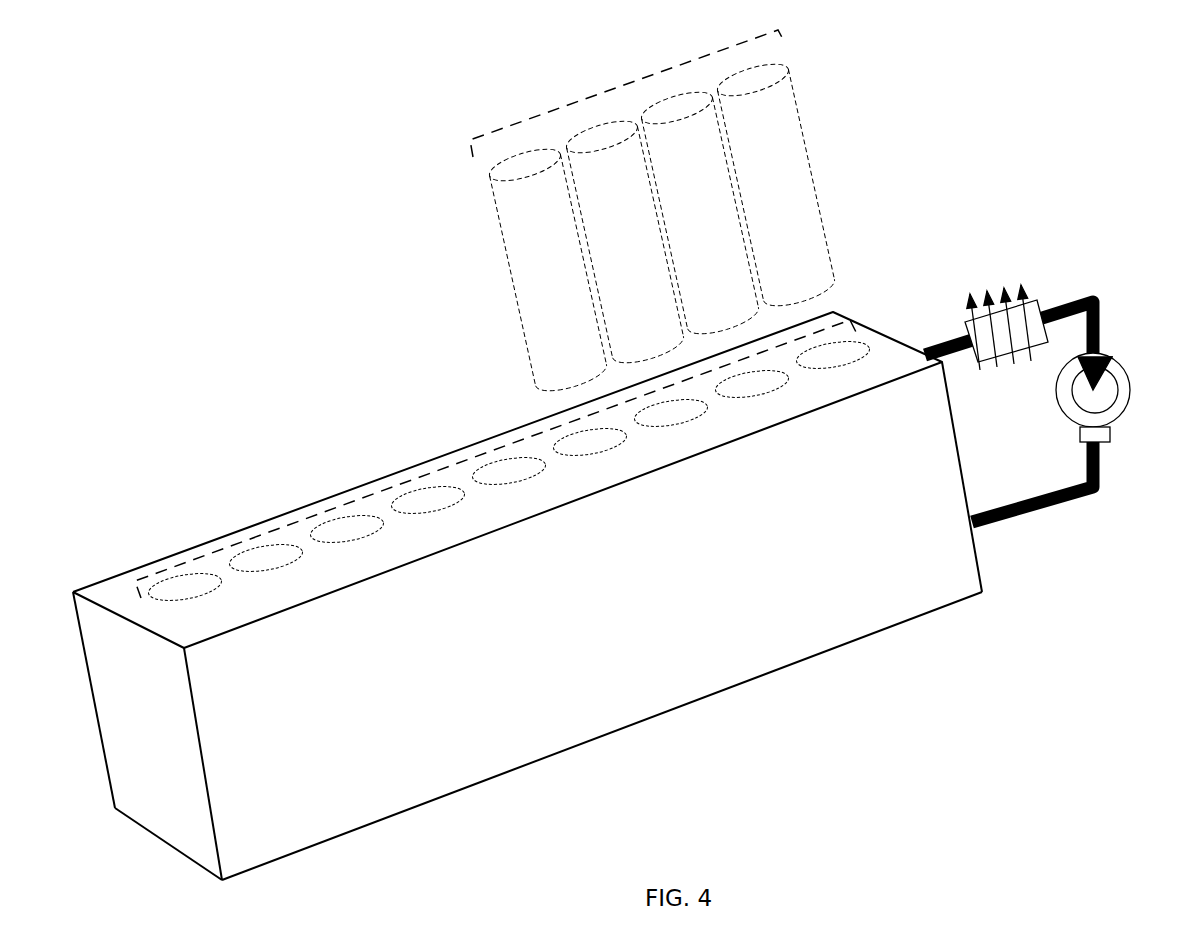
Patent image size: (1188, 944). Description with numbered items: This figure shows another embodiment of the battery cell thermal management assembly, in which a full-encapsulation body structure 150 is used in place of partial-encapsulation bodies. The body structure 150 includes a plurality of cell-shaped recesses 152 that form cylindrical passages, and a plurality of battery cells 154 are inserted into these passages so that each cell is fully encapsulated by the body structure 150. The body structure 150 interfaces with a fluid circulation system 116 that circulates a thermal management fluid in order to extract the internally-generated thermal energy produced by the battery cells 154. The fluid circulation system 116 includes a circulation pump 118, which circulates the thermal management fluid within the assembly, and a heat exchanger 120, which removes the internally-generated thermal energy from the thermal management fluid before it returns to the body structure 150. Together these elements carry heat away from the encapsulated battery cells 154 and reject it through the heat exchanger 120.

The fluid circulation system 116 is at (1105, 240).
The circulation pump 118 is at (1112, 405).
The heat exchanger 120 is at (1041, 298).
The body structure 150 is at (527, 596).
The cell-shaped recesses 152 is at (488, 440).
The battery cells 154 is at (623, 82).